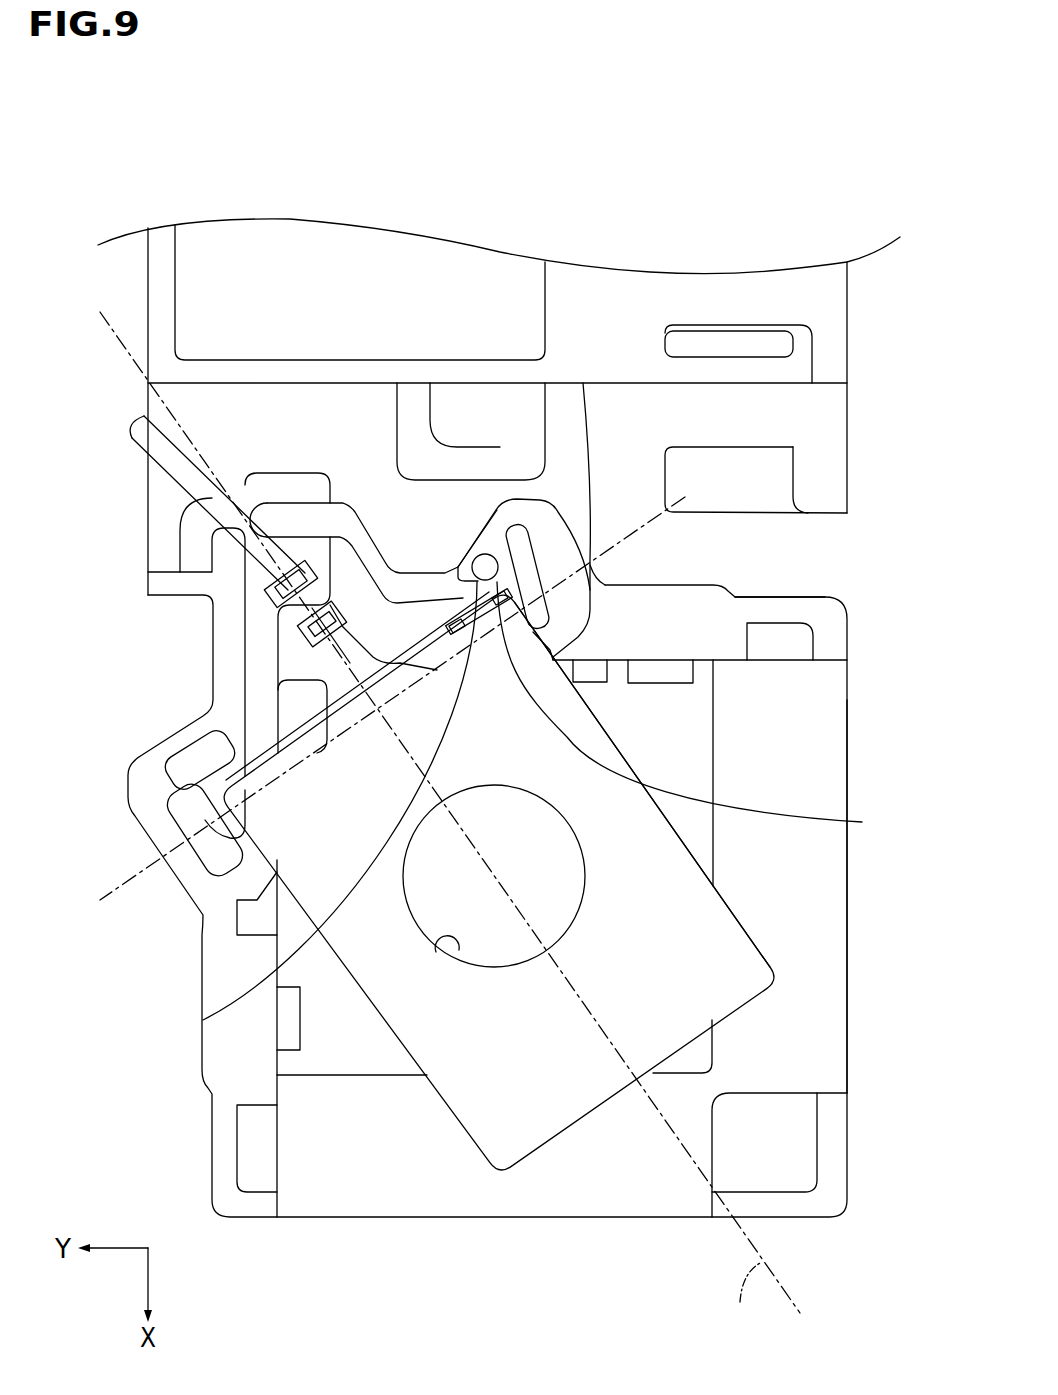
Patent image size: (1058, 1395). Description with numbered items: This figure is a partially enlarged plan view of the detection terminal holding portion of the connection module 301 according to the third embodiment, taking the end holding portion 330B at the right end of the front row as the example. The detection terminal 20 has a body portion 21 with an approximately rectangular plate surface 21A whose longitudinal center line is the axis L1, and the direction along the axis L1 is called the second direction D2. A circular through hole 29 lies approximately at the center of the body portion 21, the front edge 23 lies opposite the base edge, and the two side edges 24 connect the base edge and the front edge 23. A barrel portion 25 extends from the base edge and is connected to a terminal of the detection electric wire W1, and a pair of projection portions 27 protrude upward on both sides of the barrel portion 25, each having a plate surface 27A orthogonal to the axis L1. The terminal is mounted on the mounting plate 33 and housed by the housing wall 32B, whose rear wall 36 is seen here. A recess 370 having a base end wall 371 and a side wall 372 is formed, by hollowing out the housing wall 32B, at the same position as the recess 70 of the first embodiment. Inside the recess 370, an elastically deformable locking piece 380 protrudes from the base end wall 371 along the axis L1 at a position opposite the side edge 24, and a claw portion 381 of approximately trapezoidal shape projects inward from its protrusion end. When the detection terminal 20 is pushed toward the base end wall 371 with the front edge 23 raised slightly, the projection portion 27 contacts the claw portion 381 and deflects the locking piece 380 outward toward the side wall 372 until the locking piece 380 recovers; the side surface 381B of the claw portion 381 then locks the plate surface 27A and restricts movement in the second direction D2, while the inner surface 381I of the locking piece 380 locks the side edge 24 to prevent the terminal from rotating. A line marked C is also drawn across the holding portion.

The connection module 301 is at (175, 148).
The projection portion 27 is at (356, 490).
The base end wall 371 is at (458, 567).
The inner surface 381I is at (475, 520).
The recess 370 is at (497, 512).
The locking piece 380 is at (535, 520).
The claw portion 381 is at (583, 383).
The side wall 372 is at (572, 650).
The end holding portion 330B is at (658, 713).
The detection electric wire W1 is at (152, 443).
The barrel portion 25 is at (300, 613).
The recess 70 is at (155, 750).
The section line C is at (688, 501).
The rear wall 36 is at (722, 625).
The housing wall 32B is at (823, 586).
The mounting plate 33 is at (797, 768).
The side surface 381B is at (707, 709).
The plate surface 21A is at (718, 992).
The body portion 21 is at (660, 926).
The side edge 24 is at (718, 922).
The plate surface 27A is at (203, 1020).
The through hole 29 is at (455, 957).
The detection terminal 20 is at (505, 1135).
The front edge 23 is at (595, 1113).
The second direction D2 is at (744, 1299).
The axis L1 is at (461, 827).